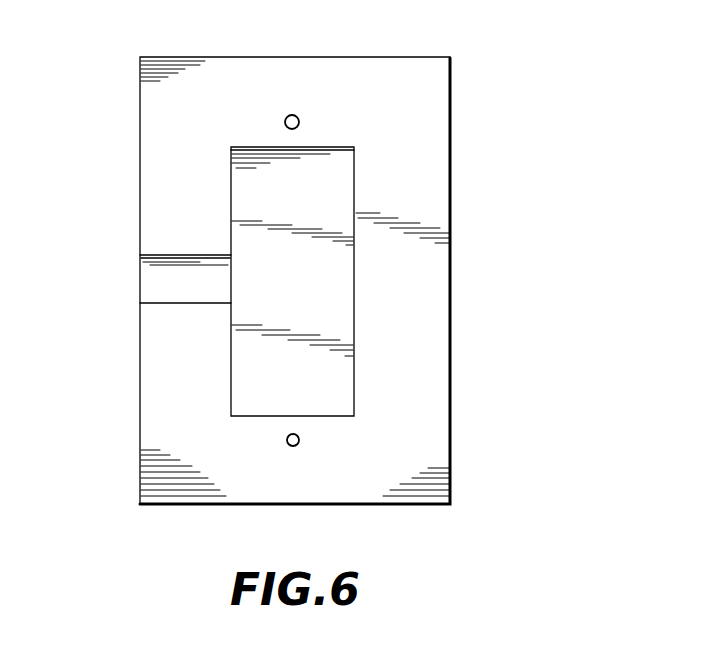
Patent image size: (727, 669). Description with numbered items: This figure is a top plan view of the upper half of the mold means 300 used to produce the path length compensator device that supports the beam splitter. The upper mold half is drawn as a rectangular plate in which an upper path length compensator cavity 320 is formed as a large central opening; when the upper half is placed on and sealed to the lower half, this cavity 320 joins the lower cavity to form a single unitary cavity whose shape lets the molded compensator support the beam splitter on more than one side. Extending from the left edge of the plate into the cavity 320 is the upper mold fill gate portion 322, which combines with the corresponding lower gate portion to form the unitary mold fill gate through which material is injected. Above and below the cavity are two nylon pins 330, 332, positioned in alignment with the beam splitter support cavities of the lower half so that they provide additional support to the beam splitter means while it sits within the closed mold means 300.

The mold means 300 is at (477, 137).
The upper path length compensator cavity 320 is at (350, 297).
The upper mold fill gate portion 322 is at (152, 275).
The nylon pin 330 is at (293, 115).
The nylon pin 332 is at (296, 446).